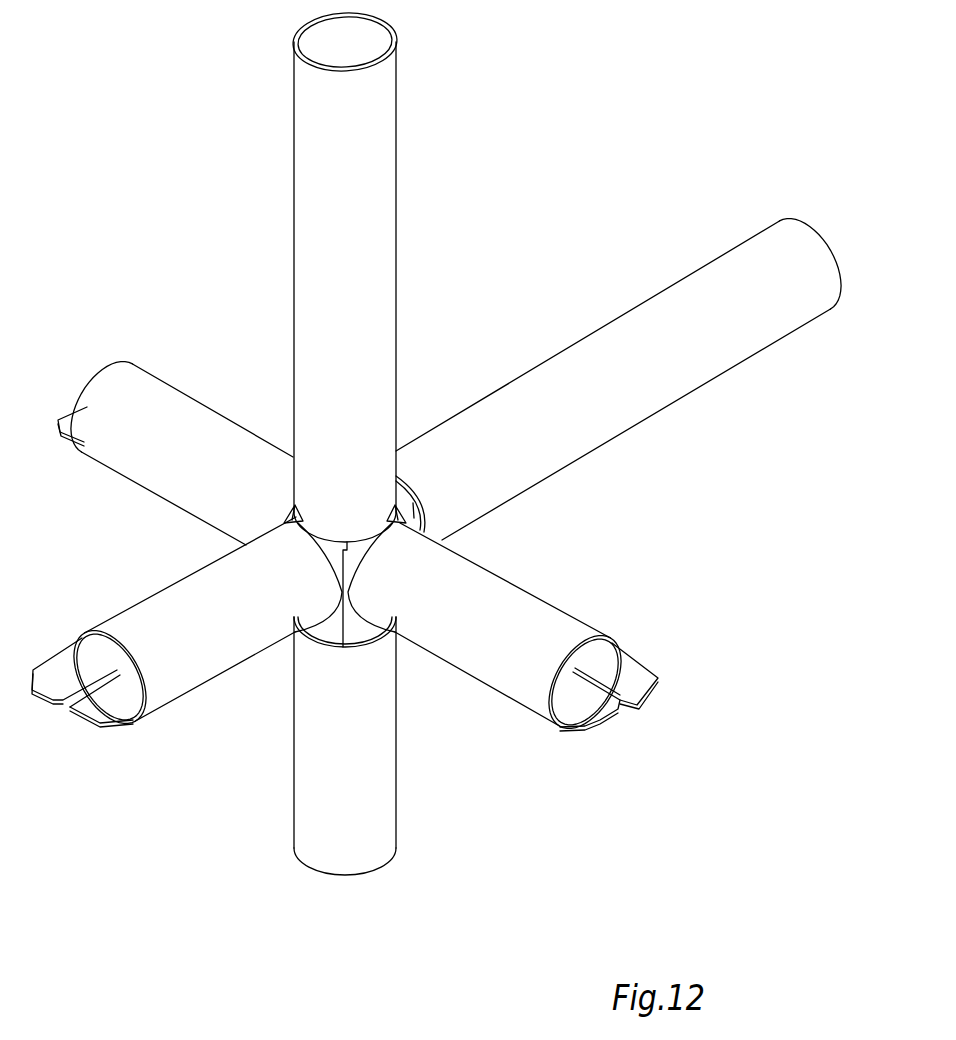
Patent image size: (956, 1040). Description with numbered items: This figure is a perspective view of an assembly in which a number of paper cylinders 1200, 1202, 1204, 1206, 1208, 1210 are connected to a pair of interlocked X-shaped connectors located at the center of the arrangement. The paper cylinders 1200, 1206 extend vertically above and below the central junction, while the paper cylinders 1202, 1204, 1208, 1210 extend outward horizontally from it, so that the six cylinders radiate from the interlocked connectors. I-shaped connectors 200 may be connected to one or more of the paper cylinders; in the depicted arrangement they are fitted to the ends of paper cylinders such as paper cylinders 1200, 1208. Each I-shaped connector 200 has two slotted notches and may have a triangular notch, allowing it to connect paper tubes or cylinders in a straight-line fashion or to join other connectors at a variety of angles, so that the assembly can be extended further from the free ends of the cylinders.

The paper cylinder 1200 is at (305, 752).
The paper cylinder 1202 is at (517, 598).
The paper cylinder 1204 is at (590, 338).
The paper cylinder 1206 is at (305, 285).
The paper cylinder 1208 is at (183, 578).
The paper cylinder 1210 is at (106, 387).
The I-shaped connector 200 is at (417, 495).